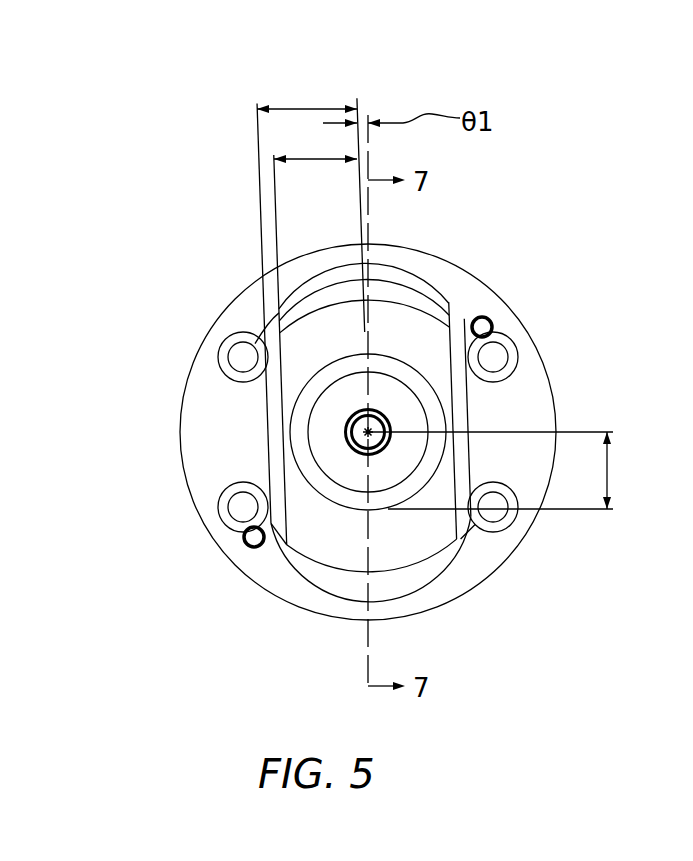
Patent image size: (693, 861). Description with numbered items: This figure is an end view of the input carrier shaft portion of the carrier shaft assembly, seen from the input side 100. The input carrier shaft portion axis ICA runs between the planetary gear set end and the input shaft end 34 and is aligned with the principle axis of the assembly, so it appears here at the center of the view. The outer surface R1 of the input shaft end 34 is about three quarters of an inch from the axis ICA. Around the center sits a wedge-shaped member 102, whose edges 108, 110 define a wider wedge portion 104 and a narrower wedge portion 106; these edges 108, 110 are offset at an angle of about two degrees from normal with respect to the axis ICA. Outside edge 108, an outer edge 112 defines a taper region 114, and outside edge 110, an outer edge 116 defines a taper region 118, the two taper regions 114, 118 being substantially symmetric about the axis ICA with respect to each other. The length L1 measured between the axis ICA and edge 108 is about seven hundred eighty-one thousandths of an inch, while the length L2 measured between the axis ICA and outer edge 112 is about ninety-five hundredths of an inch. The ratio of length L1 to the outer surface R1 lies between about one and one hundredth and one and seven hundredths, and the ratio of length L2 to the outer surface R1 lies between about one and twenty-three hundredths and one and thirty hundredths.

The input side 100 is at (112, 240).
The wedge-shaped member 102 is at (393, 330).
The wider wedge portion 104 is at (428, 340).
The narrower wedge portion 106 is at (413, 537).
The edge 108 is at (283, 397).
The edge 110 is at (477, 362).
The outer edge 112 is at (268, 418).
The taper region 114 is at (283, 463).
The outer edge 116 is at (470, 397).
The taper region 118 is at (457, 407).
The input shaft end 34 is at (275, 555).
The input carrier shaft portion axis ICA is at (360, 428).
The length L1 is at (310, 161).
The length L2 is at (298, 108).
The outer surface R1 is at (510, 470).